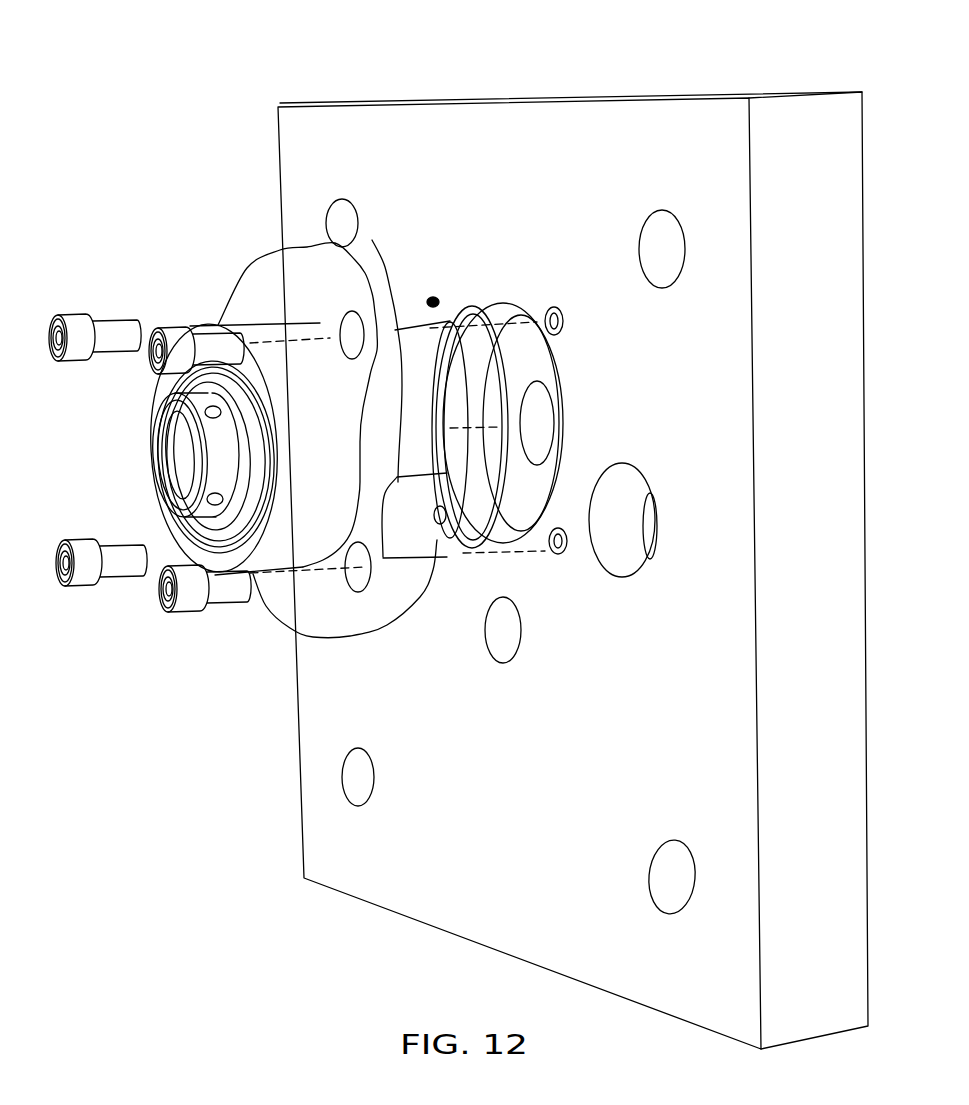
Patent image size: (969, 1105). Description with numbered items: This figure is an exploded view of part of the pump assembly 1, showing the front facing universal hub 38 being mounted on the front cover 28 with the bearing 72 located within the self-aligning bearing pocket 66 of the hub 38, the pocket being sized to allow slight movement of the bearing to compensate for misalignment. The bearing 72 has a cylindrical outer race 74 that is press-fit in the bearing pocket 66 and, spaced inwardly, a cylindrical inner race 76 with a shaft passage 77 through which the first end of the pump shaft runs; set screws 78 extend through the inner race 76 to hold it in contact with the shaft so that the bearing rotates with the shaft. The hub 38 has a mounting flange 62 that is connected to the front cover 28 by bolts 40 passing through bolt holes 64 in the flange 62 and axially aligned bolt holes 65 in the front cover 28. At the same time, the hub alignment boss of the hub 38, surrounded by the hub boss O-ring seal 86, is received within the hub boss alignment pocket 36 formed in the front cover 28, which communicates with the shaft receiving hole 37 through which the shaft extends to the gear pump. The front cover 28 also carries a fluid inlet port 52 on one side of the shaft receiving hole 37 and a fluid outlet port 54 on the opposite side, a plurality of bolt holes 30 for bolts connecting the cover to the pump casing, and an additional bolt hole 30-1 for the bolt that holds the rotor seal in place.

The pump assembly 1 is at (531, 56).
The front cover 28 is at (863, 575).
The bolt holes 30 is at (343, 212).
The additional bolt hole 30-1 is at (505, 663).
The hub boss alignment pocket 36 is at (553, 355).
The shaft receiving hole 37 is at (556, 420).
The front facing universal hub 38 is at (280, 311).
The bolts 40 is at (104, 316).
The fluid inlet port 52 is at (684, 244).
The fluid outlet port 54 is at (657, 520).
The mounting flange 62 is at (266, 606).
The bolt holes 64 is at (362, 305).
The bolt holes 65 is at (436, 296).
The self-aligning bearing pocket 66 is at (345, 395).
The bearing 72 is at (147, 426).
The outer race 74 is at (250, 466).
The inner race 76 is at (232, 438).
The shaft passage 77 is at (160, 455).
The set screws 78 is at (221, 412).
The hub boss O-ring seal 86 is at (457, 565).